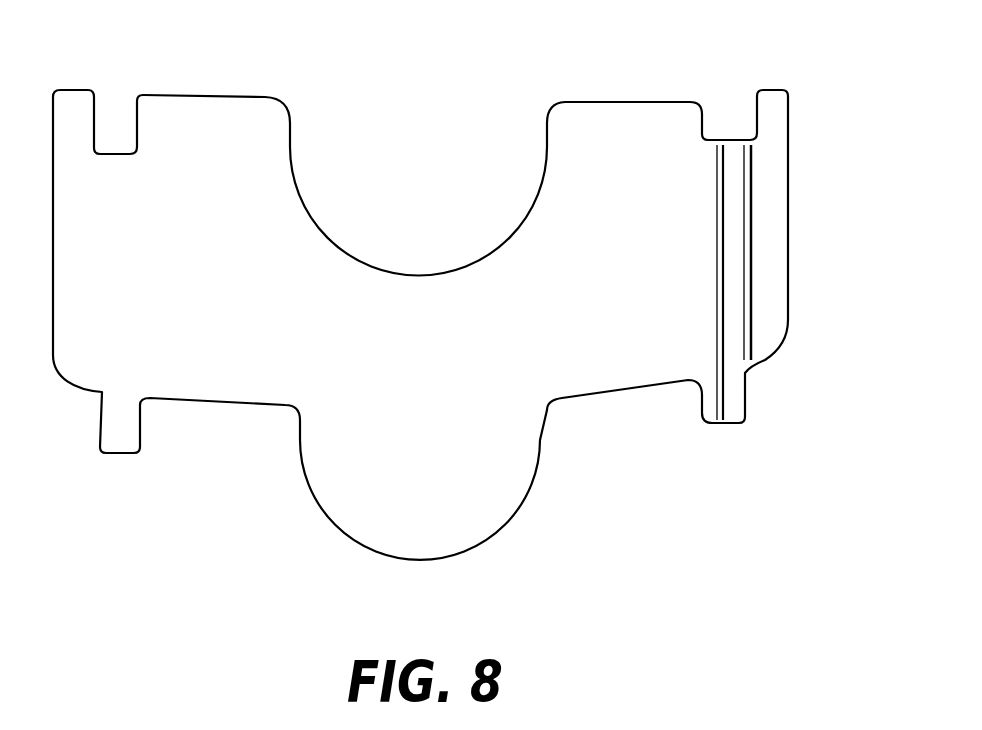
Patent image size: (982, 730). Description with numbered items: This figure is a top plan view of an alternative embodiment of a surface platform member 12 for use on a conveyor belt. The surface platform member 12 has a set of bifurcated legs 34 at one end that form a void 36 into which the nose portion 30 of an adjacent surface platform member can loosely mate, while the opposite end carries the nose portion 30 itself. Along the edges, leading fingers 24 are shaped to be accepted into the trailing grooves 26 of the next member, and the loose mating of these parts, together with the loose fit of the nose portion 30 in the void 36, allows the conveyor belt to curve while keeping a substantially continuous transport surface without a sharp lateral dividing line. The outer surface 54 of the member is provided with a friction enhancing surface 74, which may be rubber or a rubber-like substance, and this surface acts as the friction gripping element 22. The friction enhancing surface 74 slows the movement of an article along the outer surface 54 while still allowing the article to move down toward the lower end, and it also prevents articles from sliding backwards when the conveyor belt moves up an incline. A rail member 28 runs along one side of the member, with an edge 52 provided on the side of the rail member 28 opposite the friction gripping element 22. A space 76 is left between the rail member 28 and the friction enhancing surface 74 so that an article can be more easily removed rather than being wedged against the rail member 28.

The surface platform member 12 is at (288, 368).
The friction gripping element 22 is at (385, 388).
The leading fingers 24 is at (118, 430).
The trailing grooves 26 is at (111, 123).
The rail member 28 is at (735, 340).
The nose portion 30 is at (408, 527).
The bifurcated legs 34 is at (213, 135).
The void 36 is at (405, 213).
The edge 52 is at (777, 178).
The outer surface 54 is at (343, 457).
The friction enhancing surface 74 is at (540, 367).
The space 76 is at (708, 207).